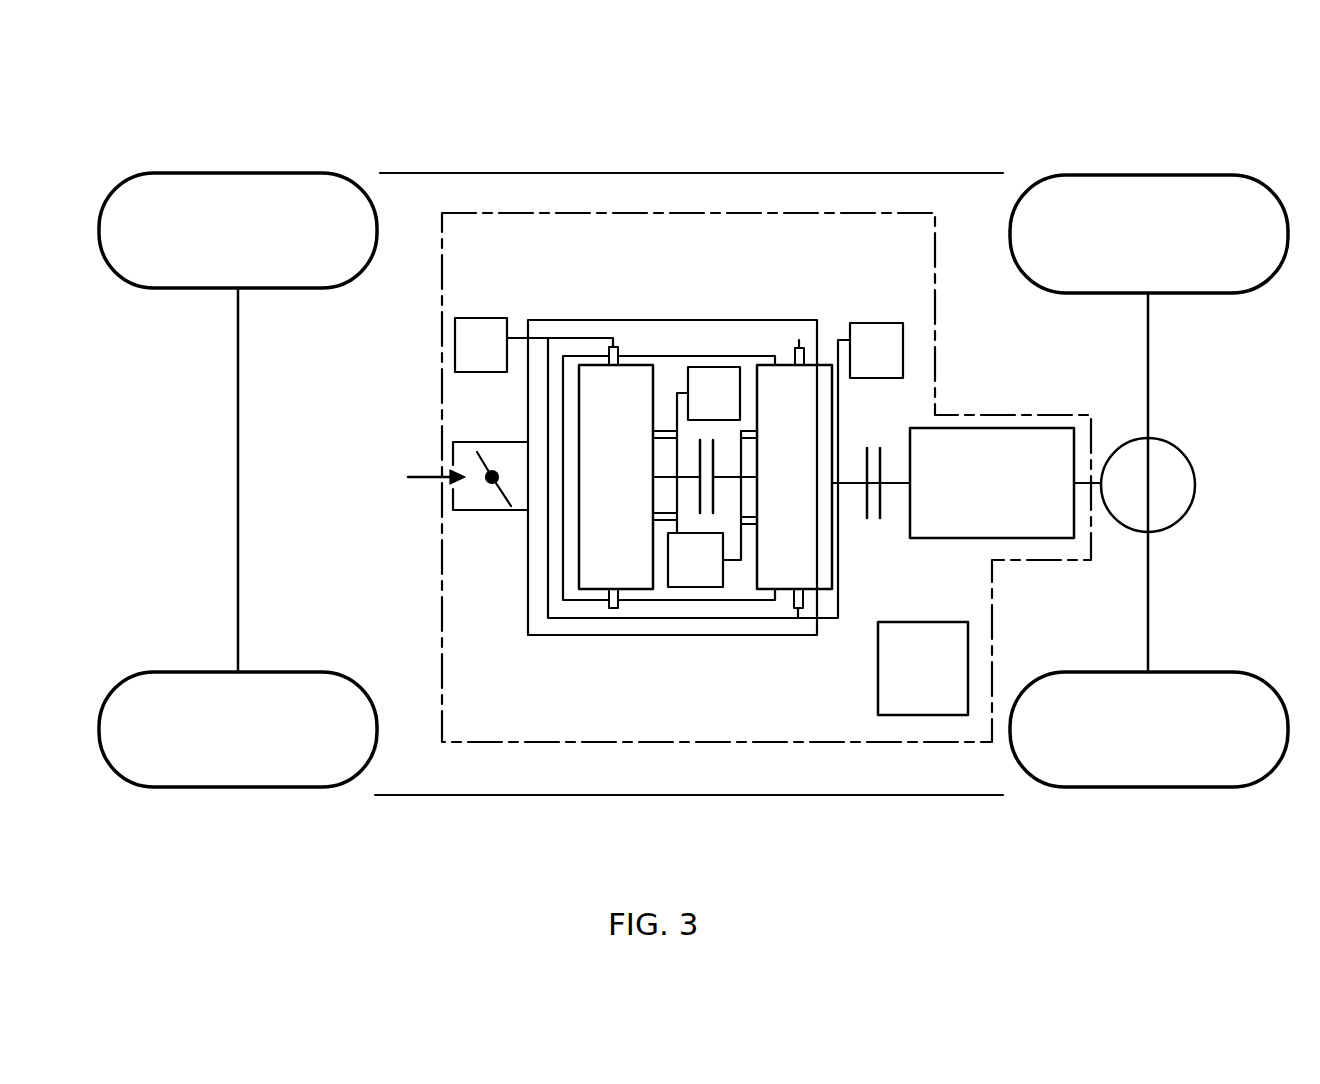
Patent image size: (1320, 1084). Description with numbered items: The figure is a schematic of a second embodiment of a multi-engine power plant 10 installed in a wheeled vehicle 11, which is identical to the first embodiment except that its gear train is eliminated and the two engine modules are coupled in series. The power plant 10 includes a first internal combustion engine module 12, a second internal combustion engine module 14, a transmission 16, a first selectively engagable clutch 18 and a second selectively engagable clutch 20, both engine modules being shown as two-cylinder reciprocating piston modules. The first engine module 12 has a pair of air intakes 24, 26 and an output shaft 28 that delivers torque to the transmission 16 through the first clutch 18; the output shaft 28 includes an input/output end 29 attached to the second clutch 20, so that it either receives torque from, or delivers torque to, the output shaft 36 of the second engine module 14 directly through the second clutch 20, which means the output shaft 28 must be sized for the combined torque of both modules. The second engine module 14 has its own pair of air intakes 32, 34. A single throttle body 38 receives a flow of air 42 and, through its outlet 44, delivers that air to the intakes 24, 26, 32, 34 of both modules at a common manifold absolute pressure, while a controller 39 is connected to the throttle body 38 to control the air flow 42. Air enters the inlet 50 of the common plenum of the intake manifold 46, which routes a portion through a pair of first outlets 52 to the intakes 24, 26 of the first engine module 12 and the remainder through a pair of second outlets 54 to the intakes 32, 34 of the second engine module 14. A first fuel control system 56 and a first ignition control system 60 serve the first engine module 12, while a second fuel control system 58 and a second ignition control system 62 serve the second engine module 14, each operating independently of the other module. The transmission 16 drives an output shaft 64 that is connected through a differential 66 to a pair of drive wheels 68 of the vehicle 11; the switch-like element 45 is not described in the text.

The multi-engine power plant 10 is at (909, 213).
The vehicle 11 is at (808, 160).
The first internal combustion engine module 12 is at (814, 501).
The second internal combustion engine module 14 is at (637, 501).
The transmission 16 is at (1012, 500).
The first selectively engagable clutch 18 is at (880, 450).
The second selectively engagable clutch 20 is at (700, 462).
The air intake 24 is at (787, 362).
The air intake 26 is at (787, 603).
The output shaft 28 is at (845, 471).
The input/output end 29 is at (728, 477).
The air intake 32 is at (622, 358).
The air intake 34 is at (607, 598).
The output shaft 36 is at (655, 478).
The single throttle body 38 is at (452, 510).
The controller 39 is at (943, 683).
The flow of air 42 is at (423, 480).
The outlet 44 is at (522, 458).
The switch 45 is at (533, 480).
The intake manifold 46 is at (552, 319).
The inlet 50 is at (540, 508).
The first outlets 52 is at (770, 340).
The second outlets 54 is at (621, 316).
The first fuel control system 56 is at (897, 366).
The second fuel control system 58 is at (502, 361).
The first ignition control system 60 is at (716, 576).
The second ignition control system 62 is at (734, 410).
The output shaft 64 is at (1101, 476).
The differential 66 is at (1186, 466).
The drive wheels 68 is at (1218, 175).